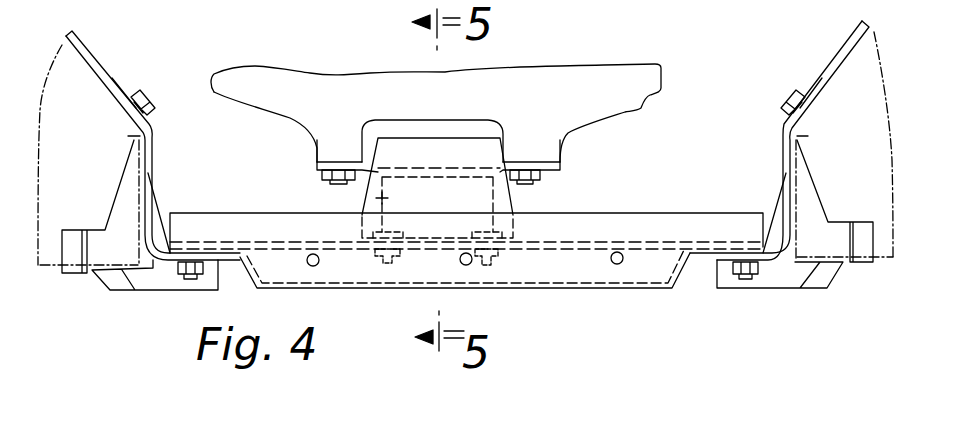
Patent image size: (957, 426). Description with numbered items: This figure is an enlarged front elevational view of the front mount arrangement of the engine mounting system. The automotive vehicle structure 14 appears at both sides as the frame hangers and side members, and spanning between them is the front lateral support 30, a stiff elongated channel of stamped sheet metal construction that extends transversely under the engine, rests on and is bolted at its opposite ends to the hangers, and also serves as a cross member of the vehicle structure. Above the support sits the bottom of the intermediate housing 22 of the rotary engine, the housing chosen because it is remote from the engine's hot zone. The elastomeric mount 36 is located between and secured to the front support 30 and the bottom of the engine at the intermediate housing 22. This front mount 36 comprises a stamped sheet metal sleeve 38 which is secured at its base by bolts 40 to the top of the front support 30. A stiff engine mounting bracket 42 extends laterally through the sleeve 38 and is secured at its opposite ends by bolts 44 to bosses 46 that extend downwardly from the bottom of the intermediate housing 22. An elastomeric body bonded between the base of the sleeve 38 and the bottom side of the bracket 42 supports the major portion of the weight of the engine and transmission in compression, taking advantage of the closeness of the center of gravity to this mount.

The automotive vehicle structure 14 is at (90, 62).
The intermediate housing 22 is at (630, 78).
The front lateral support 30 is at (652, 267).
The elastomeric mount 36 is at (380, 198).
The stamped sheet metal sleeve 38 is at (441, 150).
The bolts 40 is at (393, 256).
The engine mounting bracket 42 is at (513, 172).
The bolts 44 is at (341, 170).
The bosses 46 is at (318, 142).